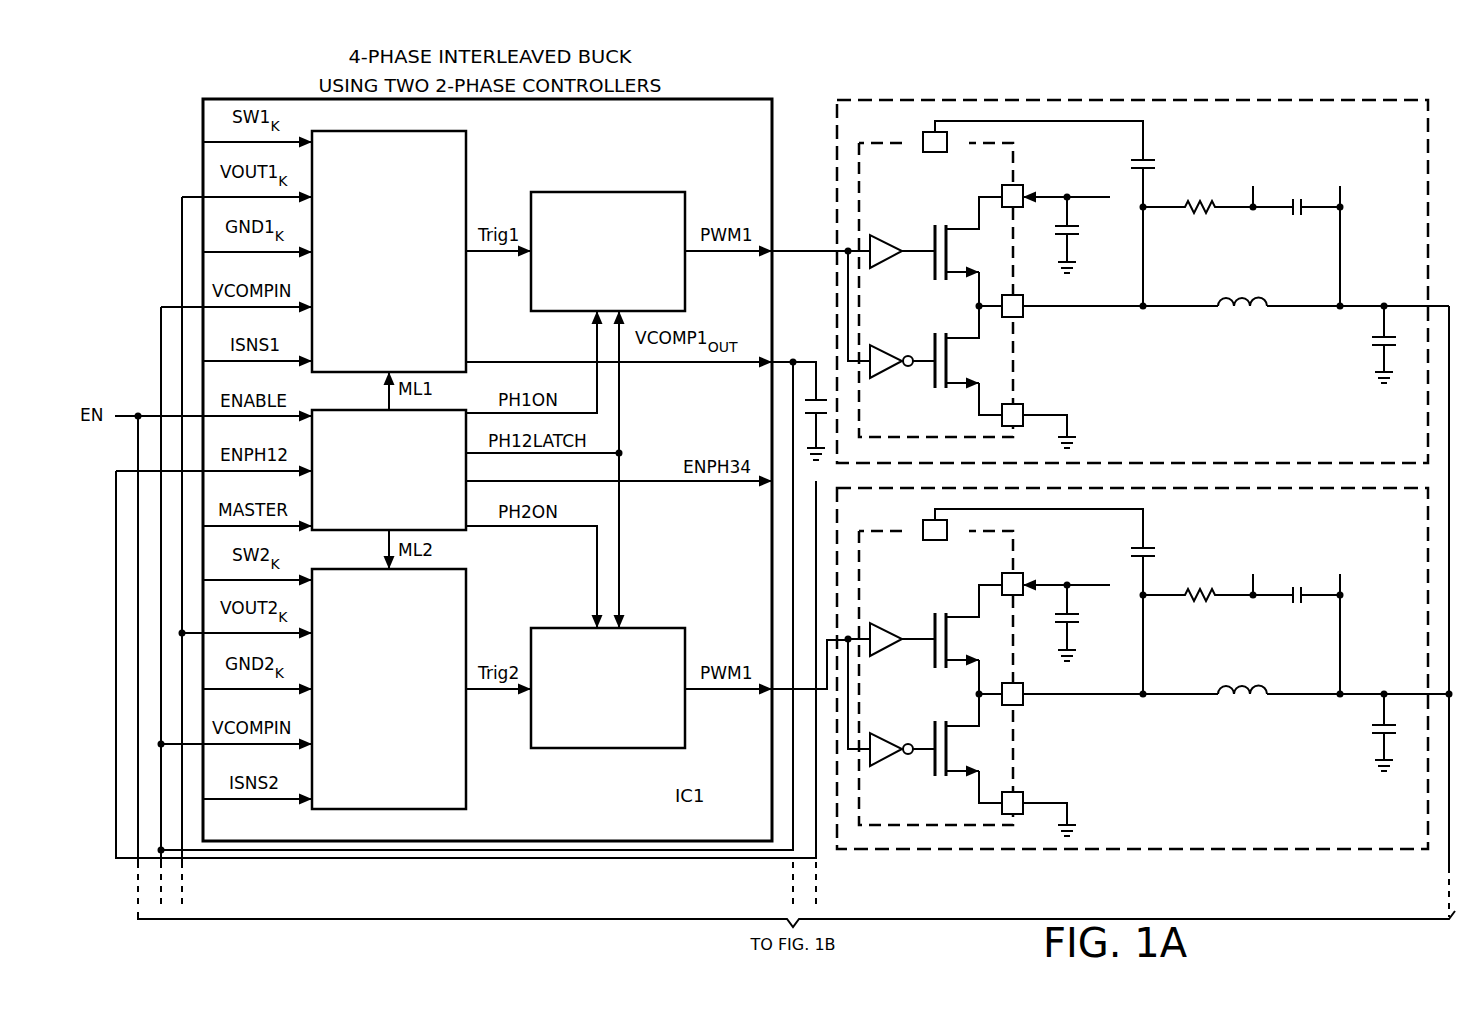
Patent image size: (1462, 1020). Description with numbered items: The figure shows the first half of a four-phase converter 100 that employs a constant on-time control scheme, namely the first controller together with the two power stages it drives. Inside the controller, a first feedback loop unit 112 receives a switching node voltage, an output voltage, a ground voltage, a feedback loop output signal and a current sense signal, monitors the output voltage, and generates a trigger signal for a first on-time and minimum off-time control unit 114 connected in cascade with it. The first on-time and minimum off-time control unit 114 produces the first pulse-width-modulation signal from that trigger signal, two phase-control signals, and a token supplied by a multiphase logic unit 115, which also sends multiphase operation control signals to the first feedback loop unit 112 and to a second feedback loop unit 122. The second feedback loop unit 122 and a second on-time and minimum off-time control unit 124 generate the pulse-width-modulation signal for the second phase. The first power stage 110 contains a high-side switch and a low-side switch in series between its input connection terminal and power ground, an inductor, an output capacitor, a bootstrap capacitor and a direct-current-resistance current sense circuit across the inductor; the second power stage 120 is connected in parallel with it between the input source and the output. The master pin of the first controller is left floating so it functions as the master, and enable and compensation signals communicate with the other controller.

The four-phase converter 100 is at (156, 106).
The first power stage 110 is at (1197, 417).
The first feedback loop unit 112 is at (374, 298).
The first on-time and minimum off-time control unit 114 is at (608, 191).
The multiphase logic unit 115 is at (374, 518).
The second power stage 120 is at (1145, 668).
The second feedback loop unit 122 is at (374, 738).
The second on-time and minimum off-time control unit 124 is at (608, 749).